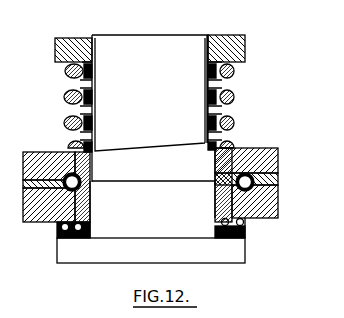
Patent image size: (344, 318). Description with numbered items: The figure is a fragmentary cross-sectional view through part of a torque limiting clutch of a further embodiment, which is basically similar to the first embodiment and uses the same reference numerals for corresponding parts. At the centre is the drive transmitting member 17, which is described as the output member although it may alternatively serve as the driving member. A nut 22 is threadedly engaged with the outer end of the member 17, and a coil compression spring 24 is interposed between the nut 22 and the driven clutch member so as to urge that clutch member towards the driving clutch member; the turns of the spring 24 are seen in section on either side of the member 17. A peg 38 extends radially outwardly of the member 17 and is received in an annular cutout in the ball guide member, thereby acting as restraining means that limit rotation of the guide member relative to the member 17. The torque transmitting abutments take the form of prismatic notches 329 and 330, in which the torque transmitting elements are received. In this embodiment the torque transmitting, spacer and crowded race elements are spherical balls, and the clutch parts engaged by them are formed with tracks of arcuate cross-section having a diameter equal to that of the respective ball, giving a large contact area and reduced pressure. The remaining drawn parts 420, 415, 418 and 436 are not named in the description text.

The drive transmitting member 17 is at (152, 136).
The nut 22 is at (222, 38).
The coil compression spring 24 is at (236, 71).
The prismatic notch 330 is at (242, 150).
The housing upper block 420 is at (280, 152).
The prismatic notch 329 is at (278, 208).
The retaining balls 415 is at (262, 212).
The lower retaining piece 418 is at (248, 228).
The left housing with ball detent 436 is at (90, 195).
The peg 38 is at (90, 226).